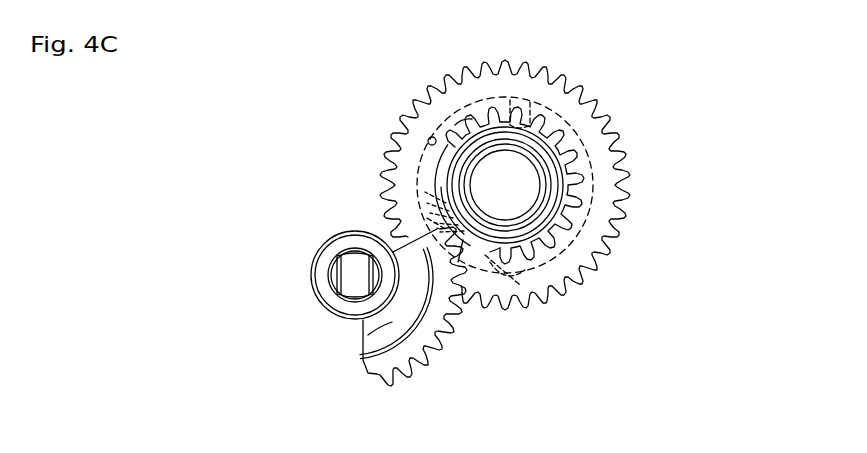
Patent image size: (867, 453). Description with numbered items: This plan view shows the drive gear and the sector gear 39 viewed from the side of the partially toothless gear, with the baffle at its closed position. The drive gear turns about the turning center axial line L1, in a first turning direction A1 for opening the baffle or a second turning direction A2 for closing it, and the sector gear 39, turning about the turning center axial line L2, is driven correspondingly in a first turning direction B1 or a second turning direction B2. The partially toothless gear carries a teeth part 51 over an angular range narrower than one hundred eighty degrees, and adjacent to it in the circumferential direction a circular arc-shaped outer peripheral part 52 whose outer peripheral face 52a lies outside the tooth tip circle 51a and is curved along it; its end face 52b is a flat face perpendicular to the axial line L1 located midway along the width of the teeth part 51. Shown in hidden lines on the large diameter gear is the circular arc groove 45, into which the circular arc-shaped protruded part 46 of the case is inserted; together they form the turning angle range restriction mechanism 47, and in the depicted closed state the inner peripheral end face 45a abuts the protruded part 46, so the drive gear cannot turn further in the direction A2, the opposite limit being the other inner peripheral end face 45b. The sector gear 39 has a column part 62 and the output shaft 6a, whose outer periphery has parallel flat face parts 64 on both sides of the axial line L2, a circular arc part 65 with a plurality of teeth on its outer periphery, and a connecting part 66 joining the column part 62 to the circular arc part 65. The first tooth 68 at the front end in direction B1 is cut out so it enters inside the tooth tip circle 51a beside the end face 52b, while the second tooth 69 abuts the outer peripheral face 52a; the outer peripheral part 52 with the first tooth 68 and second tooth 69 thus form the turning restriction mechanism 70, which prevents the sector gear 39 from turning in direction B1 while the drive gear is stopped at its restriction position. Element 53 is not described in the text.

The sector gear 39 is at (336, 299).
The circular arc-shaped outer peripheral part 52 is at (449, 122).
The outer peripheral face 52a is at (430, 165).
The end face 52b is at (475, 125).
The teeth part 51 is at (583, 190).
The tooth tip circle 51a is at (477, 250).
The circular arc groove 45 is at (585, 146).
The inner peripheral end face 45a is at (427, 218).
The inner peripheral end face 45b is at (513, 100).
The first tooth 68 is at (450, 228).
The washer 53 is at (468, 256).
The circular arc-shaped protruded part 46 is at (512, 273).
The turning angle range restriction mechanism 47 is at (525, 284).
The column part 62 is at (338, 310).
The output shaft 6a is at (330, 290).
The flat face parts 64 is at (377, 262).
The circular arc part 65 is at (392, 377).
The connecting part 66 is at (390, 323).
The second tooth 69 is at (460, 258).
The turning restriction mechanism 70 is at (520, 325).
The turning center axial line L1 is at (505, 185).
The turning center axial line L2 is at (355, 275).
The first turning direction A1 is at (555, 48).
The second turning direction A2 is at (418, 70).
The first turning direction B1 is at (502, 330).
The second turning direction B2 is at (430, 417).